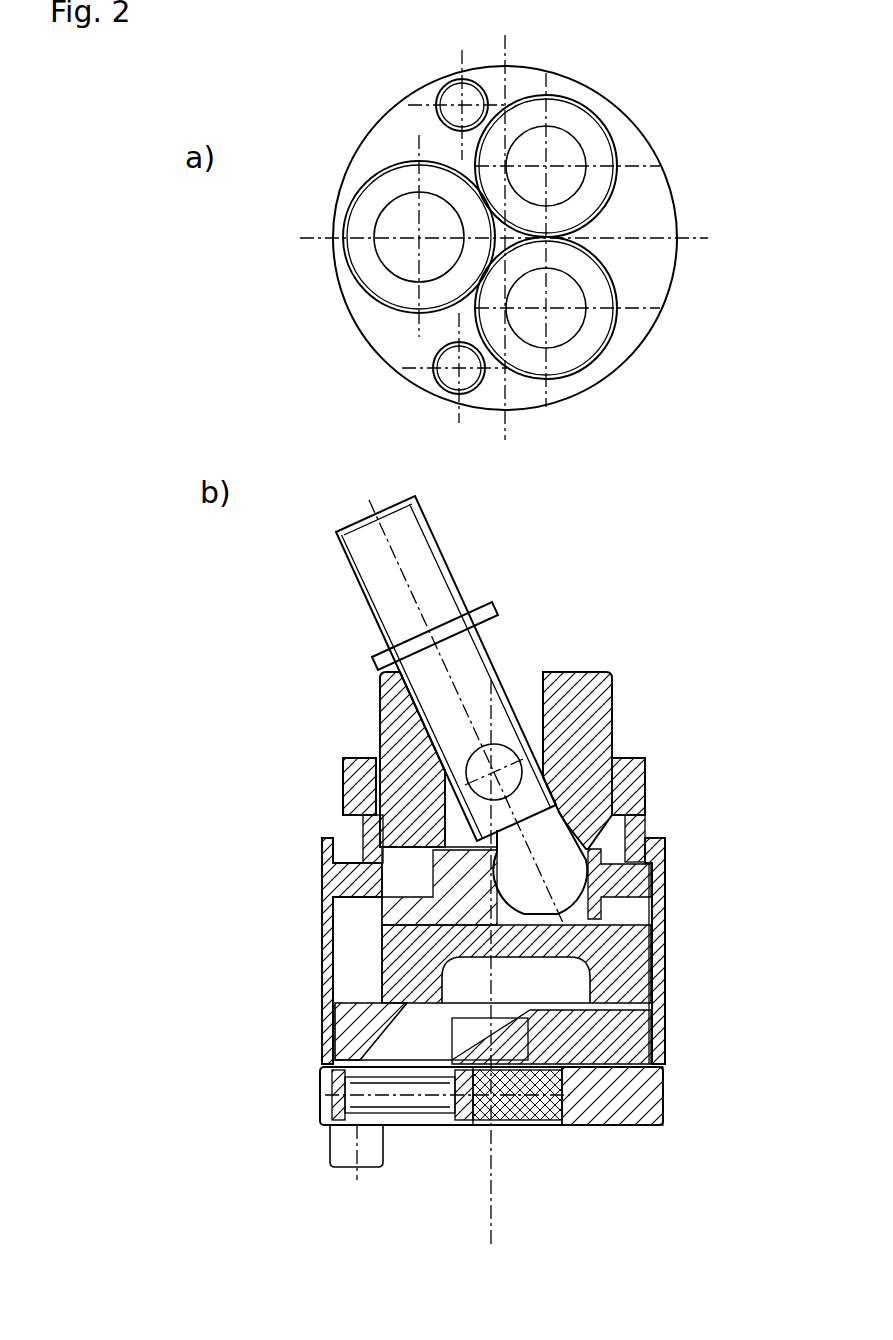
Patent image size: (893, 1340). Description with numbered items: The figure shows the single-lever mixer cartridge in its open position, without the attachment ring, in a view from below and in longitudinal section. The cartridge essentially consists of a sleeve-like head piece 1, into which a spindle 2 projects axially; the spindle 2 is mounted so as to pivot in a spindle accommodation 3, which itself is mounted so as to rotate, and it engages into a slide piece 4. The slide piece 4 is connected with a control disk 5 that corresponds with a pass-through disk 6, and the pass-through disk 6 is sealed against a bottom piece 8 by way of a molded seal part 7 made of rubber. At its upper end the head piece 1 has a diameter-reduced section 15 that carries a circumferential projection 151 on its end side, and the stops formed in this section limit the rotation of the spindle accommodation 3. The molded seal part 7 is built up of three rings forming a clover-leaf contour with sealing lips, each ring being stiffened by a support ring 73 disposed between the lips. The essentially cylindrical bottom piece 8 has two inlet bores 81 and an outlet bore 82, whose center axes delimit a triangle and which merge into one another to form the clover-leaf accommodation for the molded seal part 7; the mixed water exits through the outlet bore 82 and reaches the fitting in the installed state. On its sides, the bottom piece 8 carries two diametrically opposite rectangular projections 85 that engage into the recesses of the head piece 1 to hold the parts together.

The head piece 1 is at (665, 845).
The spindle 2 is at (443, 573).
The spindle accommodation 3 is at (601, 723).
The slide piece 4 is at (649, 927).
The control disk 5 is at (660, 982).
The pass-through disk 6 is at (353, 1030).
The molded seal part 7 is at (508, 1117).
The bottom piece 8 is at (657, 207).
The diameter-reduced section 15 is at (649, 806).
The circumferential projection 151 is at (649, 762).
The support ring 73 is at (335, 1095).
The inlet bores 81 is at (562, 158).
The outlet bore 82 is at (407, 257).
The rectangular projections 85 is at (347, 1150).